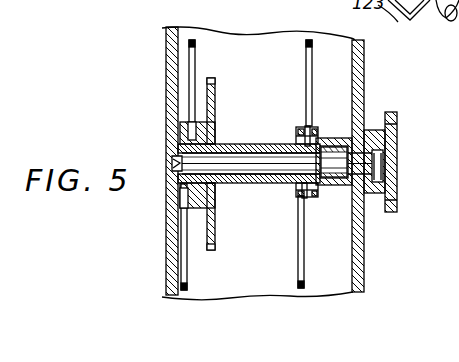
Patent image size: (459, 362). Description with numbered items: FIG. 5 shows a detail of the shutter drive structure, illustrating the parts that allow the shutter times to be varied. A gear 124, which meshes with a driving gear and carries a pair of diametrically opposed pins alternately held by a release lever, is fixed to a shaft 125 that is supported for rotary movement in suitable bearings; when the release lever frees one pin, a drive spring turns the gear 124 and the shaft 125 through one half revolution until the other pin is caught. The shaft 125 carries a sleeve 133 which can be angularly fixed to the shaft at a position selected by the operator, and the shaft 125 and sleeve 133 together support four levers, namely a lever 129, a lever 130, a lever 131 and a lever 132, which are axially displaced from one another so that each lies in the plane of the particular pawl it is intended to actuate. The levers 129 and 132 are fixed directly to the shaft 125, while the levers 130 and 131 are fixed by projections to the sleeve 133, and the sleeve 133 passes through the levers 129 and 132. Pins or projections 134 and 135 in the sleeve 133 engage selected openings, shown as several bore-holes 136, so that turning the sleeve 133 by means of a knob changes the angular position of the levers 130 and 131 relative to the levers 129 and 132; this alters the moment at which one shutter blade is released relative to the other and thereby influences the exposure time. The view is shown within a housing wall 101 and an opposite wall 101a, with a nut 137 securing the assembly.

The housing wall 101 is at (167, 122).
The housing wall opposite side 101a is at (363, 249).
The gear 124 is at (216, 90).
The shaft 125 is at (262, 128).
The lever 129 is at (301, 290).
The lever 130 is at (318, 20).
The lever 131 is at (187, 287).
The lever 132 is at (194, 40).
The sleeve 133 is at (340, 135).
The pin 134 is at (298, 191).
The pin 135 is at (287, 135).
The bore-holes 136 is at (306, 114).
The threaded nut 137 is at (334, 193).